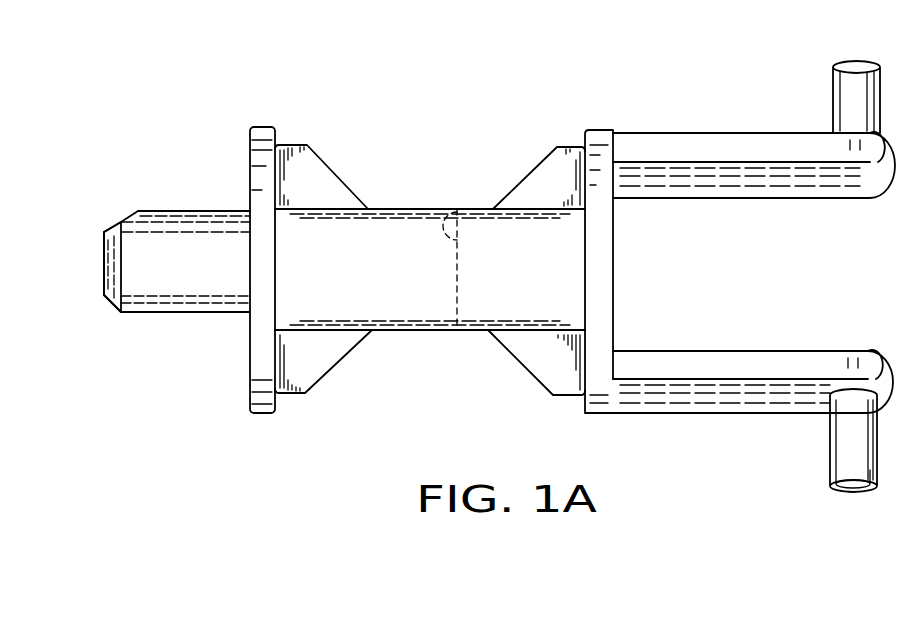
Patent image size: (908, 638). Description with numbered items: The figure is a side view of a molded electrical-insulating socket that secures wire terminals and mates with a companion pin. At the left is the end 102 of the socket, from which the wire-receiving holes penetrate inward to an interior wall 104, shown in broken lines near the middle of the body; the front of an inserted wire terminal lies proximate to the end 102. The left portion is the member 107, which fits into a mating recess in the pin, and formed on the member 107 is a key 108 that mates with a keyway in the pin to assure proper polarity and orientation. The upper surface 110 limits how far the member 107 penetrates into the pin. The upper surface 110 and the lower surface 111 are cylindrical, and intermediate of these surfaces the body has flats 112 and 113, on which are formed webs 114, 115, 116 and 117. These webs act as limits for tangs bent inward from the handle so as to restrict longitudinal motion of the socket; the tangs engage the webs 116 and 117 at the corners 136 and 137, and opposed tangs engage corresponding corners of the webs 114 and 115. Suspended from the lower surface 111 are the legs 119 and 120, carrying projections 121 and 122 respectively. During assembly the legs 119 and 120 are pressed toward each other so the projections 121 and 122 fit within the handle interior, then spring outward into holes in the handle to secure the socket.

The end 102 is at (104, 238).
The interior wall 104 is at (453, 209).
The member 107 is at (188, 277).
The key 108 is at (188, 218).
The upper surface 110 is at (250, 377).
The lower surface 111 is at (614, 306).
The flat 112 is at (378, 208).
The flat 113 is at (393, 332).
The web 114 is at (315, 174).
The web 115 is at (548, 175).
The web 116 is at (317, 362).
The web 117 is at (535, 358).
The leg 119 is at (805, 182).
The leg 120 is at (757, 368).
The projection 121 is at (848, 84).
The projection 122 is at (845, 433).
The corner 136 is at (278, 400).
The corner 137 is at (584, 398).